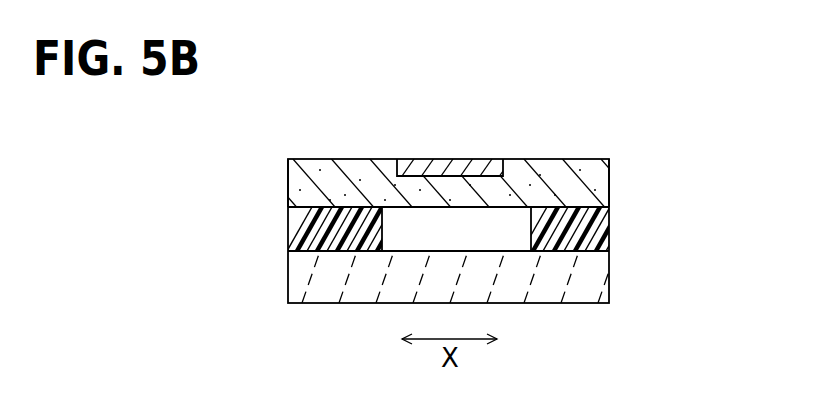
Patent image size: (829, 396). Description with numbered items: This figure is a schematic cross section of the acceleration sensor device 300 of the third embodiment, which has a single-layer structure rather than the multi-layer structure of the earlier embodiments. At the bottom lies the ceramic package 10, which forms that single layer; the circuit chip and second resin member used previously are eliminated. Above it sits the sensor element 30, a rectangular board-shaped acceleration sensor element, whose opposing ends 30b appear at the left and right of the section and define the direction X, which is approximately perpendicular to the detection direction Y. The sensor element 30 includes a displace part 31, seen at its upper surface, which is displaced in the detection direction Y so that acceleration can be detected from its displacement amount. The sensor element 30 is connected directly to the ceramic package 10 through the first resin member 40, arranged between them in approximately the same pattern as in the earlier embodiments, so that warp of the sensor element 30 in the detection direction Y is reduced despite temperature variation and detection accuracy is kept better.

The acceleration sensor device 300 is at (286, 157).
The sensor element 30 is at (368, 174).
The ends of the sensor element 30b is at (288, 181).
The displace part 31 is at (491, 170).
The first resin member 40 is at (292, 230).
The ceramic package 10 is at (605, 270).